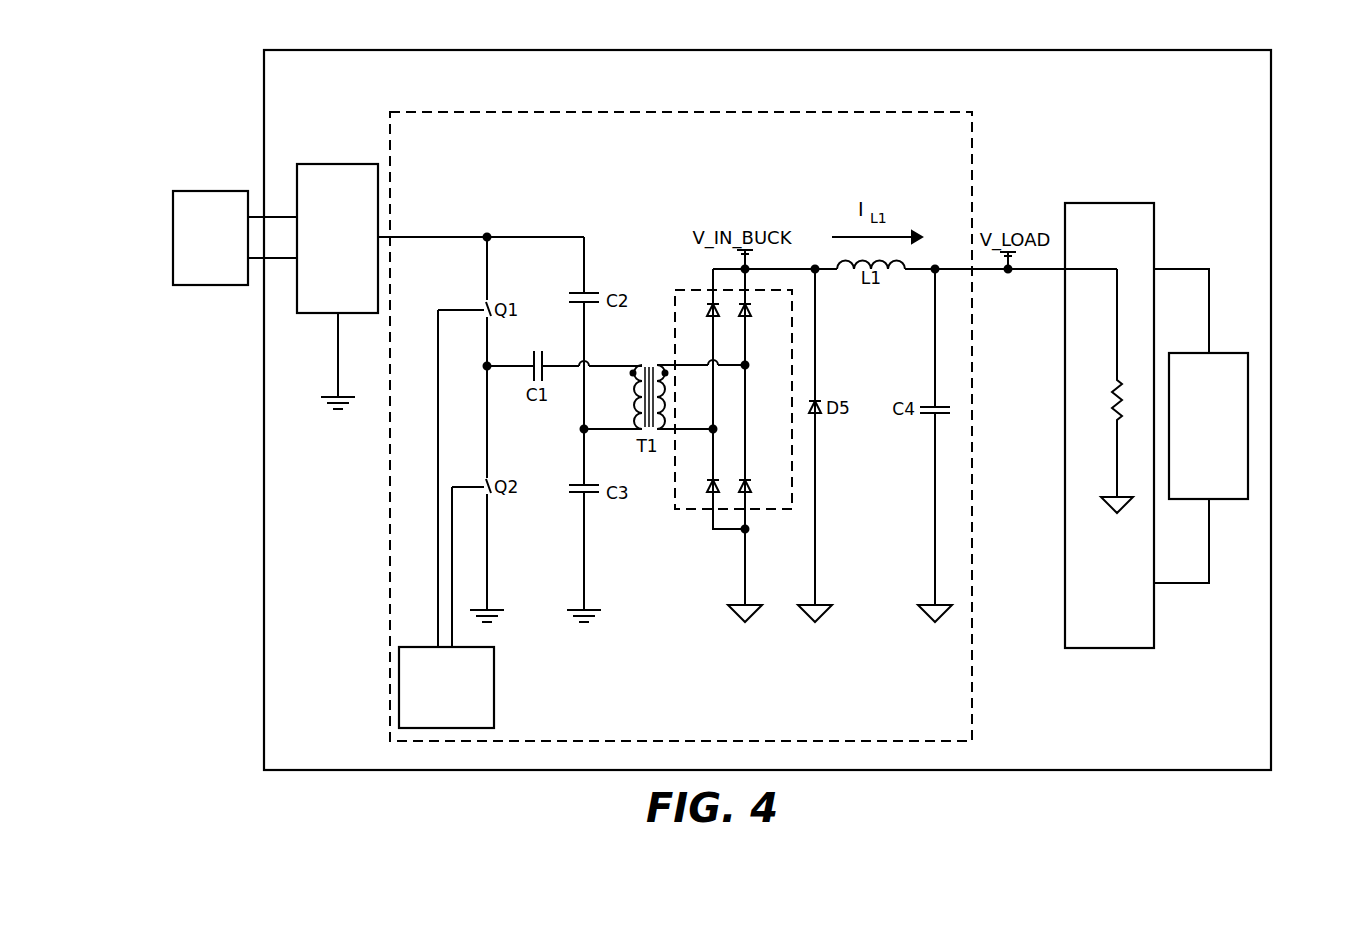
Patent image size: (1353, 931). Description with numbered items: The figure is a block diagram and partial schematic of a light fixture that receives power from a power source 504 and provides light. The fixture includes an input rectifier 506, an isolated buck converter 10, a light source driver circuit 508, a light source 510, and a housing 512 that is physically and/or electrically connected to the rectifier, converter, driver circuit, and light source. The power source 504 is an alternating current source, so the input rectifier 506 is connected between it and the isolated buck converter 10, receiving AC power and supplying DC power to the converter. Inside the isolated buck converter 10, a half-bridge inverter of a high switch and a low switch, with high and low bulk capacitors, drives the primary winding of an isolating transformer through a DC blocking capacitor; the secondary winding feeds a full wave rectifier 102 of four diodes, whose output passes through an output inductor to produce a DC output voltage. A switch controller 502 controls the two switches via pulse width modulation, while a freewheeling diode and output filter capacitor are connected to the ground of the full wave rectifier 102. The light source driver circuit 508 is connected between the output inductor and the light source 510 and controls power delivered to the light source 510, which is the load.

The housing 512 is at (700, 50).
The isolated buck converter 10 is at (405, 111).
The power source 504 is at (222, 190).
The input rectifier 506 is at (335, 163).
The switch controller 502 is at (494, 688).
The full wave rectifier 102 is at (685, 289).
The light source driver circuit 508 is at (1110, 202).
The light source 510 is at (1227, 352).